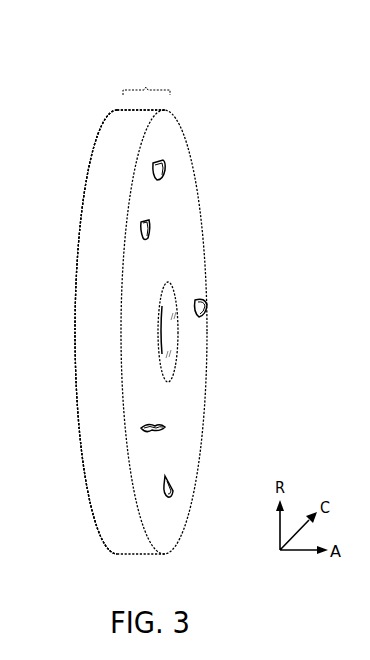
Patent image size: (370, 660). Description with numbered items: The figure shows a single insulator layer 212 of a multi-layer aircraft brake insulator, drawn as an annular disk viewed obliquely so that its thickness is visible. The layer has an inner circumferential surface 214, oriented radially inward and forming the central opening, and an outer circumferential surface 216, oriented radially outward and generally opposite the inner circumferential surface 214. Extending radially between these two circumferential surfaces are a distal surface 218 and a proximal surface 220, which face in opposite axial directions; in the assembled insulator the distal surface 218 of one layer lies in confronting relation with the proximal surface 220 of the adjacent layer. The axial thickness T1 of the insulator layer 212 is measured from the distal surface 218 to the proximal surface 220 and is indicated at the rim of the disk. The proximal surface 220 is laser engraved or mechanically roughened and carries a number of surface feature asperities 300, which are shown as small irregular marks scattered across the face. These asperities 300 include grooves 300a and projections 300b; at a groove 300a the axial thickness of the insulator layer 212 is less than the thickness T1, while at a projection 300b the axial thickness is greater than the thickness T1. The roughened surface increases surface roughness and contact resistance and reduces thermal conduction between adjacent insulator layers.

The insulator layer 212 is at (79, 78).
The inner circumferential surface 214 is at (170, 336).
The outer circumferential surface 216 is at (103, 173).
The distal surface 218 is at (66, 371).
The proximal surface 220 is at (178, 271).
The surface feature asperities 300 is at (167, 228).
The grooves 300a is at (177, 169).
The projections 300b is at (220, 305).
The axial thickness T1 is at (146, 80).